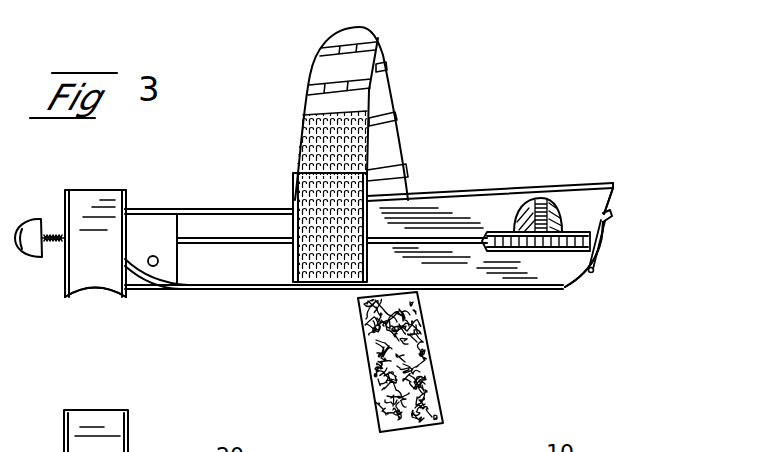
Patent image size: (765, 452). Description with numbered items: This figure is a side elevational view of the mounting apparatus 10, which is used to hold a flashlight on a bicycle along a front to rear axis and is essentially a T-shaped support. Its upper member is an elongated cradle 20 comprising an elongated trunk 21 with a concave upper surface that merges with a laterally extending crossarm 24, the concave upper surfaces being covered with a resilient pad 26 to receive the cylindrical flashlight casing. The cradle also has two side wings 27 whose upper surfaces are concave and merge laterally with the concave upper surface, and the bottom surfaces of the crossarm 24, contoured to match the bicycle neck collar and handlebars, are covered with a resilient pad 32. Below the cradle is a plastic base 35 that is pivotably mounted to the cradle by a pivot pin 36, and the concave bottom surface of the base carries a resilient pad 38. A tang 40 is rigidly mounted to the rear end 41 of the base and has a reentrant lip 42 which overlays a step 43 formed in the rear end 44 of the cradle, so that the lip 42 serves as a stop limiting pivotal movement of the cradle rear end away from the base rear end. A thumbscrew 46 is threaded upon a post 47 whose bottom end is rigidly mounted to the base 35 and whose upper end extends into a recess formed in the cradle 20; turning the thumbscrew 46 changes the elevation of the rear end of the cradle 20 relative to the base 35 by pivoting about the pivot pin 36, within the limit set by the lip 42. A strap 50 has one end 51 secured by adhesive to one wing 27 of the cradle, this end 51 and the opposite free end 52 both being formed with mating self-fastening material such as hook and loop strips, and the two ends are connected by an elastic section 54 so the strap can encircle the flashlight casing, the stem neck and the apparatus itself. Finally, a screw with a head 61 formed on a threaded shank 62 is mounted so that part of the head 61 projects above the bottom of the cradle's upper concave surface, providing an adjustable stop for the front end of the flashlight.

The mounting apparatus 10 is at (512, 110).
The cradle 20 is at (503, 176).
The trunk 21 is at (440, 197).
The crossarm 24 is at (110, 190).
The resilient pad 26 is at (195, 210).
The side wings 27 is at (293, 192).
The resilient pad 32 is at (88, 291).
The base 35 is at (243, 271).
The pivot pin 36 is at (155, 267).
The resilient pad 38 is at (490, 290).
The tang 40 is at (576, 279).
The rear end of the base 41 is at (592, 276).
The lip 42 is at (611, 216).
The step 43 is at (604, 234).
The rear end of the cradle 44 is at (611, 193).
The thumbscrew 46 is at (556, 247).
The post 47 is at (552, 203).
The strap 50 is at (286, 107).
The strap end 51 is at (337, 270).
The free end of the strap 52 is at (370, 358).
The elastic section 54 is at (403, 142).
The screw head 61 is at (34, 257).
The threaded shank 62 is at (54, 248).